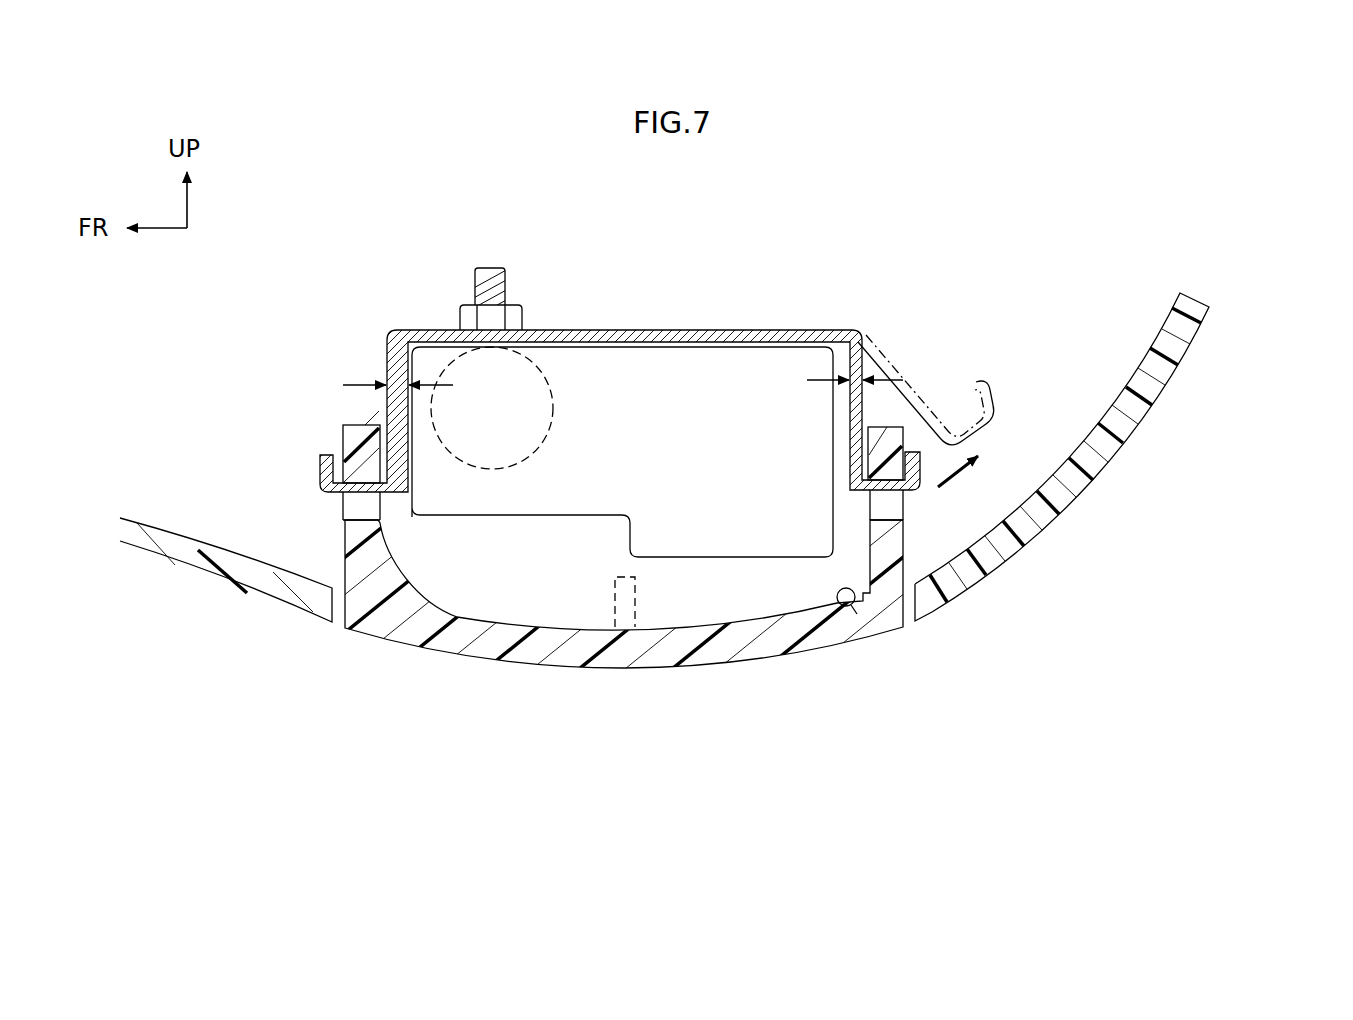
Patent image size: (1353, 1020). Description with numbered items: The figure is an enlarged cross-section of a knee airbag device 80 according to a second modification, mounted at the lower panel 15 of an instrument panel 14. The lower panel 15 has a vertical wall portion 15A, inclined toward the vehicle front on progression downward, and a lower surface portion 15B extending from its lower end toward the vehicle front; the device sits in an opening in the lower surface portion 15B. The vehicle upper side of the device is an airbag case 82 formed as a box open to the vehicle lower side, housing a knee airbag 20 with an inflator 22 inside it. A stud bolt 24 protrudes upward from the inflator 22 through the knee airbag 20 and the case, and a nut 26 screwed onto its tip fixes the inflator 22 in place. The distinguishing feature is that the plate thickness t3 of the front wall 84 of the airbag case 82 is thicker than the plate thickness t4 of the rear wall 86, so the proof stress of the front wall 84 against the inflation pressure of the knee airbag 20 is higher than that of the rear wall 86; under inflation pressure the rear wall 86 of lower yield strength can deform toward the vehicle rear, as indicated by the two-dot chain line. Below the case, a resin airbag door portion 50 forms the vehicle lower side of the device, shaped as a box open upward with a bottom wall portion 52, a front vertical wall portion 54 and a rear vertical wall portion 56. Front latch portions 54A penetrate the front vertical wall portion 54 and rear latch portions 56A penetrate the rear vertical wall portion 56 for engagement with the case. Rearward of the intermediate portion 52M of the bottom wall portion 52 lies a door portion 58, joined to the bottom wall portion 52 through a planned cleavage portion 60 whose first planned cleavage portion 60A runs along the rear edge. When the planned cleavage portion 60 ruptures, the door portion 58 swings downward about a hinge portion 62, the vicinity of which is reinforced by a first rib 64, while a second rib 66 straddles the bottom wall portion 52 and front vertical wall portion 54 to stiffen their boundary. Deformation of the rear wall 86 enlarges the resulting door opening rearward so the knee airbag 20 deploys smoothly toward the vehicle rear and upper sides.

The instrument panel 14 is at (1211, 338).
The lower panel 15 is at (725, 496).
The vertical wall portion 15A is at (1137, 420).
The lower surface portion 15B is at (180, 569).
The knee airbag 20 is at (647, 338).
The inflator 22 is at (553, 393).
The stud bolt 24 is at (490, 267).
The nut 26 is at (523, 314).
The airbag door portion 50 is at (442, 673).
The bottom wall portion 52 is at (462, 668).
The intermediate portion 52M is at (628, 669).
The front vertical wall portion 54 is at (339, 431).
The front latch portion 54A is at (348, 517).
The rear vertical wall portion 56 is at (923, 403).
The rear latch portion 56A is at (904, 507).
The door portion 58 is at (687, 669).
The planned cleavage portion 60 is at (796, 673).
The first planned cleavage portion 60A is at (845, 607).
The hinge portion 62 is at (553, 670).
The first rib 64 is at (615, 597).
The second rib 66 is at (400, 597).
The knee airbag device 80 is at (848, 242).
The airbag case 82 is at (853, 327).
The front wall 84 is at (386, 373).
The rear wall 86 is at (835, 396).
The plate thickness of the front wall t3 is at (385, 384).
The plate thickness of the rear wall t4 is at (858, 380).